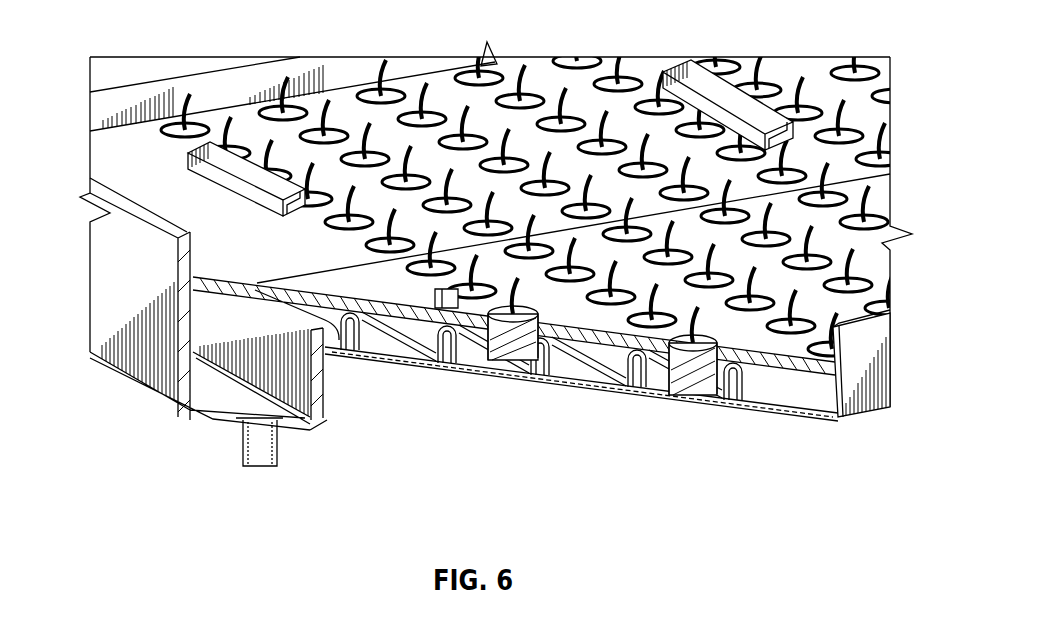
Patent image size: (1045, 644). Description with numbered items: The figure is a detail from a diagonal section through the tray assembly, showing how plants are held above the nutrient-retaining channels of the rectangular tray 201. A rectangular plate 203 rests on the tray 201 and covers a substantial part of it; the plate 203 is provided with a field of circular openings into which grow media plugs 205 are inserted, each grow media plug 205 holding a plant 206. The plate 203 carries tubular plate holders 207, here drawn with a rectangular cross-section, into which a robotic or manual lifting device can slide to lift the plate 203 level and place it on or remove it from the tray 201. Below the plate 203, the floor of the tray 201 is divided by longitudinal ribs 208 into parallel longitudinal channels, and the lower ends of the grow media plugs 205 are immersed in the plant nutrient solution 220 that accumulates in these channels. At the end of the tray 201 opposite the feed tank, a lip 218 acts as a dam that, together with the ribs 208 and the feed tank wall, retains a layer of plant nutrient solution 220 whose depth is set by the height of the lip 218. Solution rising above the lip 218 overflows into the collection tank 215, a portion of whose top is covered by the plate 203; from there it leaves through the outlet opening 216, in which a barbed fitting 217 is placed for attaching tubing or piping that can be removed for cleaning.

The rectangular tray 201 is at (862, 408).
The rectangular plate 203 is at (102, 153).
The grow media plug 205 is at (692, 368).
The plant 206 is at (847, 102).
The tubular plate holder 207 is at (223, 180).
The longitudinal rib 208 is at (468, 340).
The collection tank 215 is at (180, 370).
The outlet opening 216 is at (243, 428).
The fitting 217 is at (265, 450).
The lip 218 is at (318, 345).
The plant nutrient solution 220 is at (590, 377).